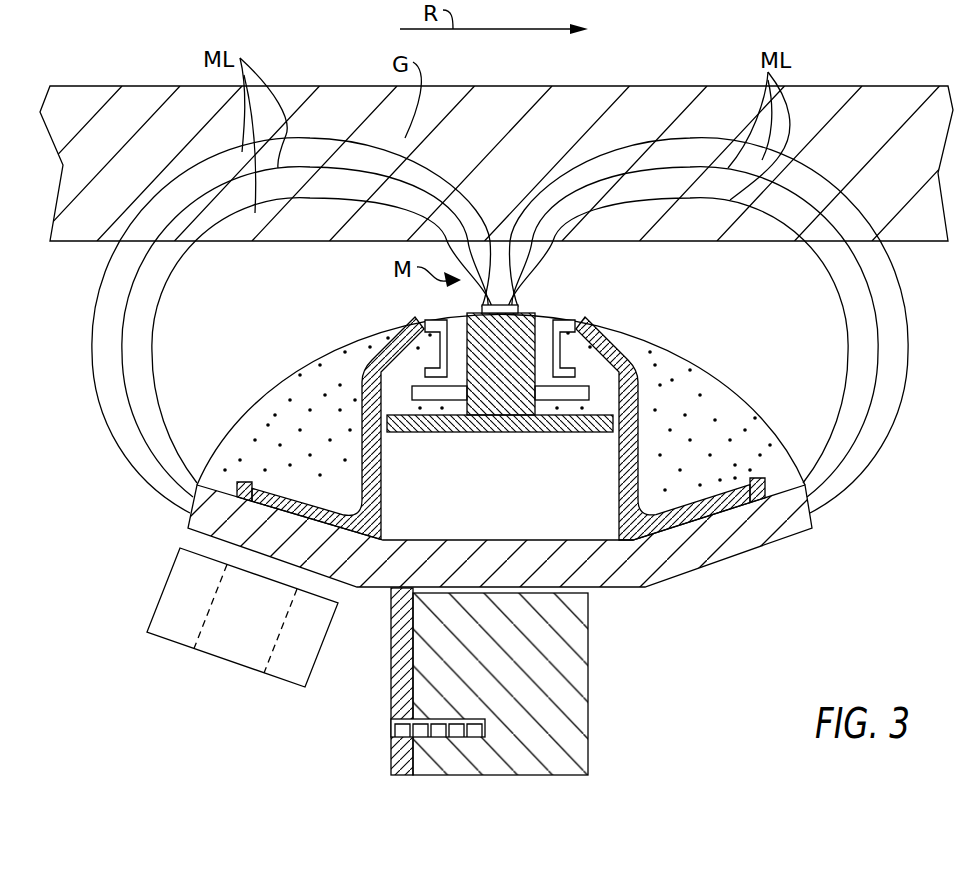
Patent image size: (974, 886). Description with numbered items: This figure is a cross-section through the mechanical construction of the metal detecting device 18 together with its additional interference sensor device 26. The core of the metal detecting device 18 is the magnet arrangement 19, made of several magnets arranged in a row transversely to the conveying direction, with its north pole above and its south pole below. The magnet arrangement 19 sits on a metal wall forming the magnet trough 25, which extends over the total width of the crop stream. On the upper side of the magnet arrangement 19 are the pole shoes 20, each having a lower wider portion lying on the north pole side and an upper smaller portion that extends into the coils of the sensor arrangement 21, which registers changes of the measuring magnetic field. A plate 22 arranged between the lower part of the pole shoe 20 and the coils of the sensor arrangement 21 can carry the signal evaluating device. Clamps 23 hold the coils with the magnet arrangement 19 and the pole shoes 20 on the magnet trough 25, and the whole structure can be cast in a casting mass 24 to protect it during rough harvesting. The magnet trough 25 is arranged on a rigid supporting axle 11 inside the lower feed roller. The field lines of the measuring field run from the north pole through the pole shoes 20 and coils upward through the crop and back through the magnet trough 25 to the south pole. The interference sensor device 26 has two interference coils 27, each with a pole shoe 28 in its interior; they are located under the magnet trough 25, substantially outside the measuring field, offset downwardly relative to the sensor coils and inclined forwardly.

The rigid supporting axle 11 is at (573, 703).
The metal detecting device 18 is at (623, 275).
The magnet arrangement 19 is at (608, 452).
The pole shoes 20 is at (518, 353).
The sensor arrangement 21 is at (540, 326).
The plate 22 is at (637, 350).
The clamps 23 is at (245, 482).
The casting mass 24 is at (294, 383).
The magnet trough 25 is at (737, 547).
The interference sensor device 26 is at (258, 698).
The interference coils 27 is at (313, 657).
The pole shoe 28 is at (220, 640).